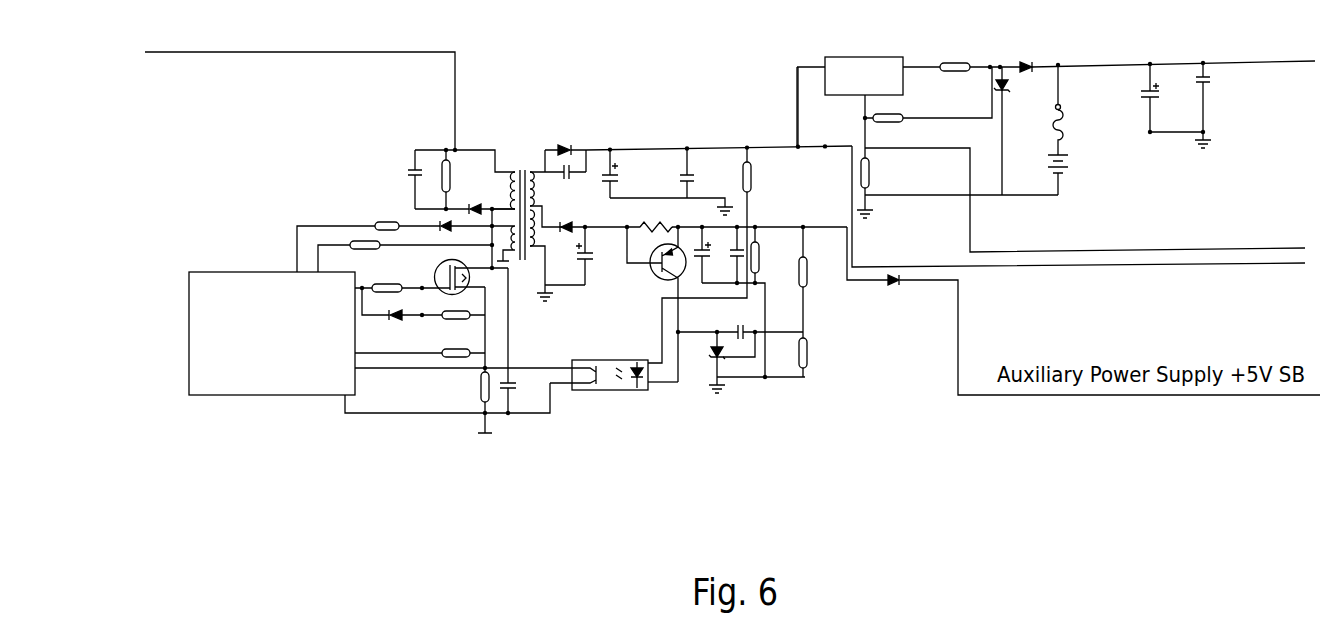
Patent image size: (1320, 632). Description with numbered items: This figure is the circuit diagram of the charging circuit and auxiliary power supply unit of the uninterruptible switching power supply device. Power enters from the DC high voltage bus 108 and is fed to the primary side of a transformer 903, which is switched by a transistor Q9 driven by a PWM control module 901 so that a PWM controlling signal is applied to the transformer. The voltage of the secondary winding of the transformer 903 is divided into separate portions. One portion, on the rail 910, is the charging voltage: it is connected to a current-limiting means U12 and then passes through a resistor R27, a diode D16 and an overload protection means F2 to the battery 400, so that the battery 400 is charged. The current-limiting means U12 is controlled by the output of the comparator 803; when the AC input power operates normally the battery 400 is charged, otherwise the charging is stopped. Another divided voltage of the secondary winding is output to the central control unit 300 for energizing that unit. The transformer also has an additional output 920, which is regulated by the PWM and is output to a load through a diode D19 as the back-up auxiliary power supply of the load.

The DC high voltage bus 108 is at (247, 83).
The transformer 903 is at (526, 216).
The rectified output rail 910 is at (698, 137).
The additional output 920 is at (795, 218).
The PWM control module 901 is at (272, 333).
The MOSFET switch Q9 is at (457, 274).
The current-limiting means U12 is at (850, 126).
The resistor R27 is at (961, 53).
The diode D16 is at (1028, 52).
The overload protection means F2 is at (1072, 110).
The battery 400 is at (1078, 175).
The diode D19 is at (896, 296).
The comparator 803 is at (1085, 200).
The central control unit 300 is at (1078, 220).